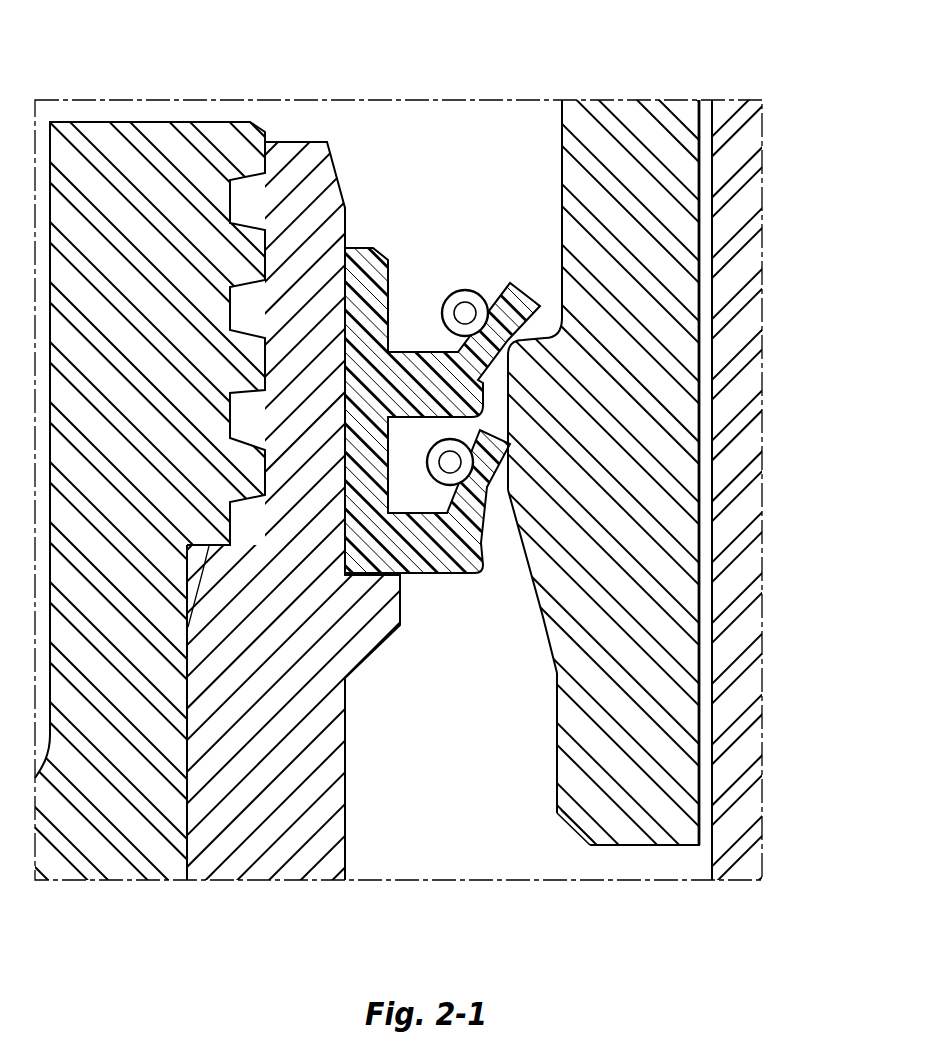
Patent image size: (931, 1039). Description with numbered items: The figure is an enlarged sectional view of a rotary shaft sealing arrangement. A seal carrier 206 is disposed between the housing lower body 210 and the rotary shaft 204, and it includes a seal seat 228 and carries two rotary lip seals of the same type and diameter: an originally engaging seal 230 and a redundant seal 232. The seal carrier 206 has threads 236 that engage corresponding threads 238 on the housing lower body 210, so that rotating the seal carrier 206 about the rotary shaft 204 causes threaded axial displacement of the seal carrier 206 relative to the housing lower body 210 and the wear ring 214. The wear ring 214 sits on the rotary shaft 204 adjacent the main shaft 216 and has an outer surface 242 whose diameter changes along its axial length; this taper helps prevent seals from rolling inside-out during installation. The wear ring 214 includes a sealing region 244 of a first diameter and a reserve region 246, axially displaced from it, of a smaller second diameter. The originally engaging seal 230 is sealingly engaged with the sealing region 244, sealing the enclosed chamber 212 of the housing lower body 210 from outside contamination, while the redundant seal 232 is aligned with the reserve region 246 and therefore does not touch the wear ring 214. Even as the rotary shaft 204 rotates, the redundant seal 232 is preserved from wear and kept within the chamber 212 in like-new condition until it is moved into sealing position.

The rotary shaft 204 is at (566, 836).
The seal carrier 206 is at (350, 808).
The housing lower body 210 is at (236, 182).
The chamber 212 is at (477, 170).
The wear ring 214 is at (465, 519).
The main shaft 216 is at (752, 768).
The seal seat 228 is at (373, 577).
The originally engaging seal 230 is at (460, 578).
The redundant seal 232 is at (492, 306).
The threads 236 is at (206, 203).
The threads 238 is at (268, 247).
The outer surface 242 is at (542, 612).
The sealing region 244 is at (572, 365).
The reserve region 246 is at (577, 105).